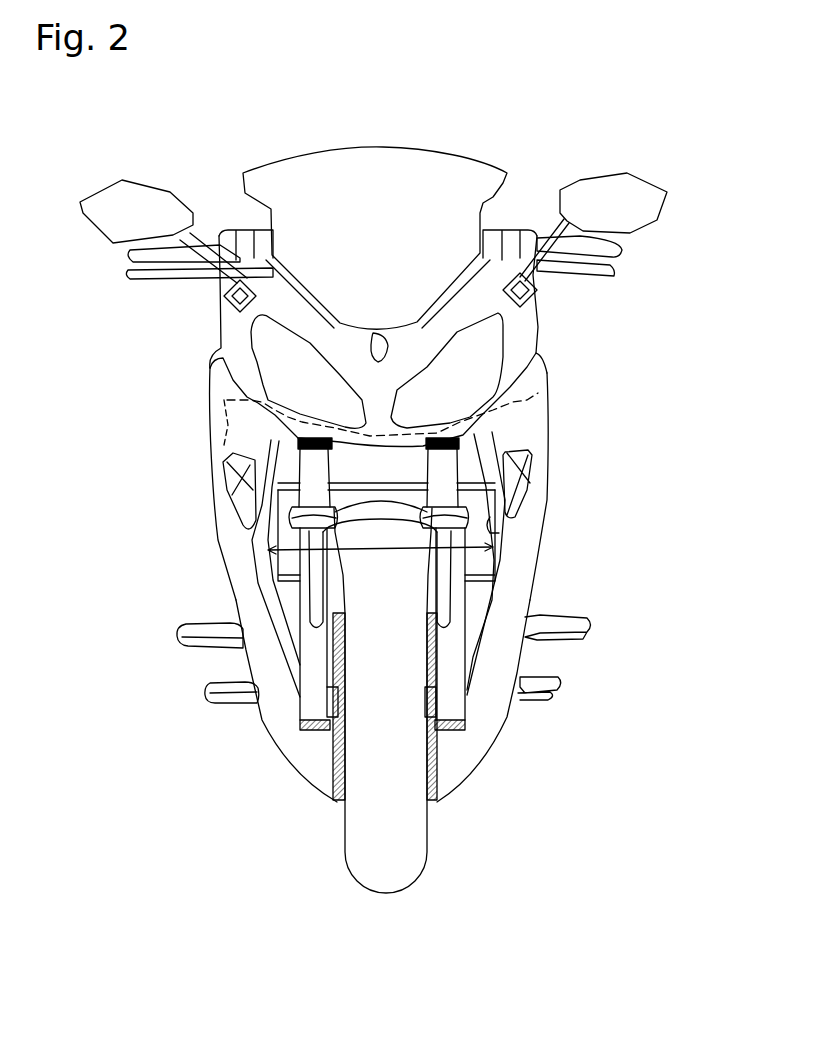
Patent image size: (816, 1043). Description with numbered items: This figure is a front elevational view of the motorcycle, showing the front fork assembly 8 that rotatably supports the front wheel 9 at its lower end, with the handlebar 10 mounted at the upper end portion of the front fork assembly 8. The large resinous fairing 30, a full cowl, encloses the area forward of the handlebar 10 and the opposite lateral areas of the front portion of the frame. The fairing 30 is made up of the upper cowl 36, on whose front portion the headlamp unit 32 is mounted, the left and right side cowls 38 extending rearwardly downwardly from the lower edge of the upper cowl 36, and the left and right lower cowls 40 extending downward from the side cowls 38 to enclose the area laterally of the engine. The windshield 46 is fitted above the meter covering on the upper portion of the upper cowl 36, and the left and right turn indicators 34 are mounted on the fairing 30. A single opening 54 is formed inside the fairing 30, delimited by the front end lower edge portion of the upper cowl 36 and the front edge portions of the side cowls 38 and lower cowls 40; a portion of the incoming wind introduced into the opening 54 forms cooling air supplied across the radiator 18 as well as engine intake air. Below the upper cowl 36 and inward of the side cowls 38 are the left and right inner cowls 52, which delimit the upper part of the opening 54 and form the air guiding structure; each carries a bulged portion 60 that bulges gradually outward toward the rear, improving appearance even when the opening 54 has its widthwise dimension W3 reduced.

The front fork assembly 8 is at (310, 462).
The front wheel 9 is at (410, 860).
The handlebar 10 is at (143, 258).
The radiator 18 is at (482, 562).
The fairing 30 is at (395, 526).
The headlamp unit 32 is at (487, 352).
The turn indicators 34 is at (225, 492).
The upper cowl 36 is at (227, 323).
The side cowls 38 is at (230, 542).
The lower cowls 40 is at (303, 760).
The windshield 46 is at (377, 160).
The inner cowls 52 is at (533, 500).
The opening 54 is at (500, 527).
The bulged portion 60 is at (227, 400).
The widthwise dimension W3 is at (285, 558).